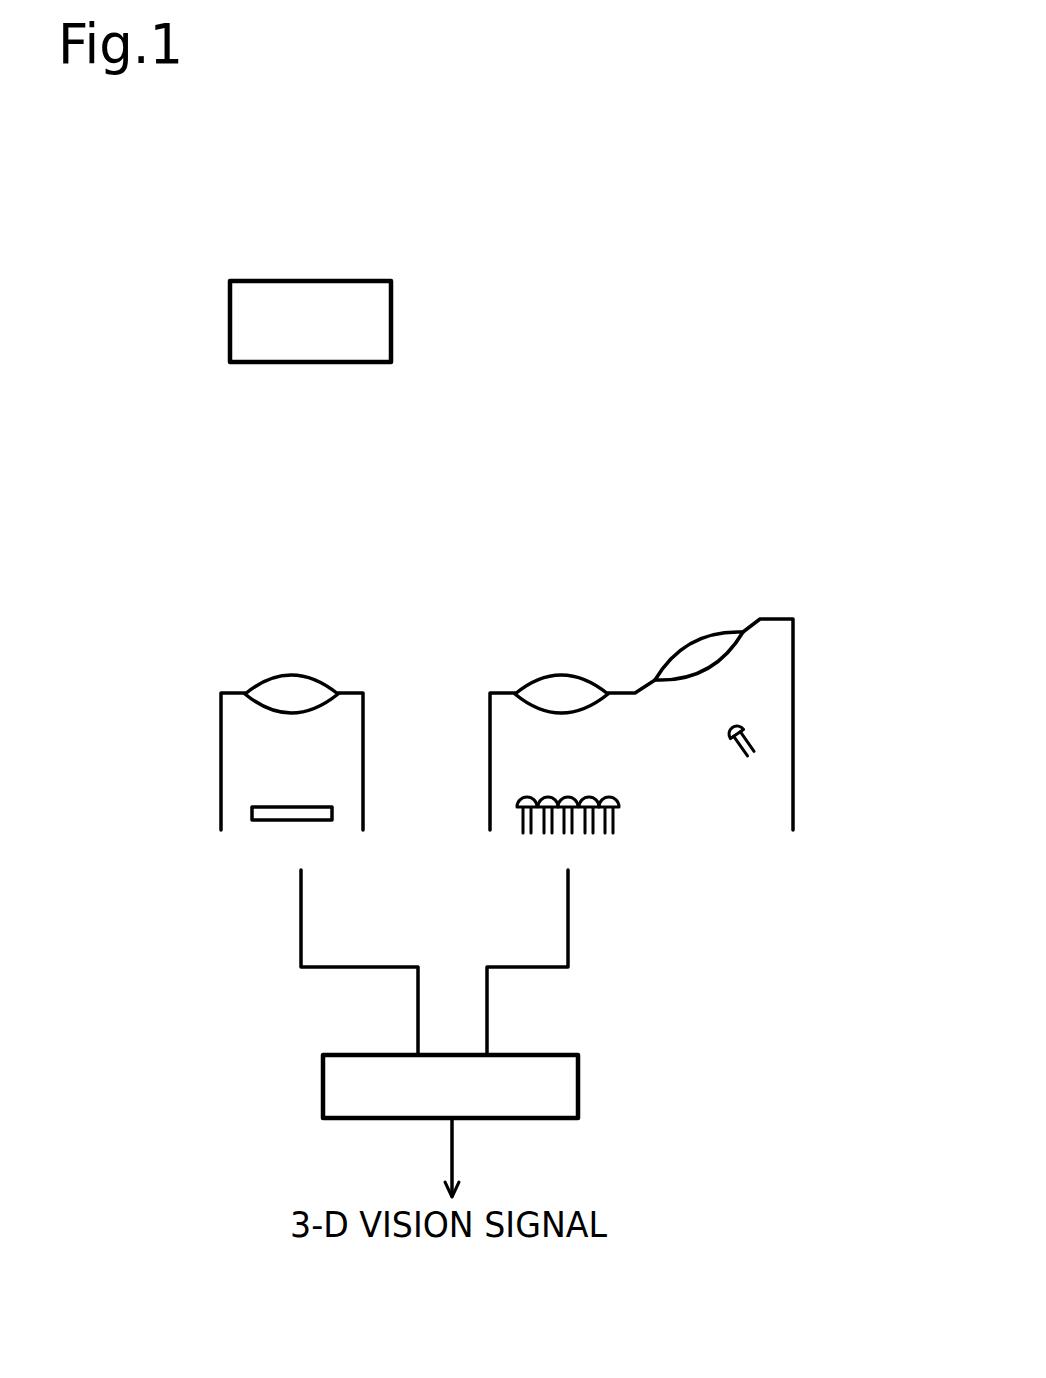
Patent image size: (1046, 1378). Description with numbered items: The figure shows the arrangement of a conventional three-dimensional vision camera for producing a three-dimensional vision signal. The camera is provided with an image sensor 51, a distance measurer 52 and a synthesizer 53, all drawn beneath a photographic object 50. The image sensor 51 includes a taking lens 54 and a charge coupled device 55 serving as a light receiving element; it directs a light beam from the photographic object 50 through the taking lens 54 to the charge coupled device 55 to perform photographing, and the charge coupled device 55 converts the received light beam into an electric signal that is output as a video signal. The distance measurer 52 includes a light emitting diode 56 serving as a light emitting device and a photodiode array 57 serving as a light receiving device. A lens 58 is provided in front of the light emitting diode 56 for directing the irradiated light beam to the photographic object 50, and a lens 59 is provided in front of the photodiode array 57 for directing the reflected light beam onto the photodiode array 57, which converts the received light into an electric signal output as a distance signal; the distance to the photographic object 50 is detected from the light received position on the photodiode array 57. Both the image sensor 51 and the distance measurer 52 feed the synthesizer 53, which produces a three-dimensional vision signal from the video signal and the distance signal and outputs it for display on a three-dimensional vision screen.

The photographic object 50 is at (391, 312).
The image sensor 51 is at (220, 730).
The distance measurer 52 is at (793, 652).
The synthesizer 53 is at (578, 1085).
The taking lens 54 is at (307, 675).
The charge coupled device 55 is at (270, 823).
The light emitting diode 56 is at (735, 750).
The photodiode array 57 is at (620, 815).
The lens 58 is at (700, 630).
The lens 59 is at (555, 676).